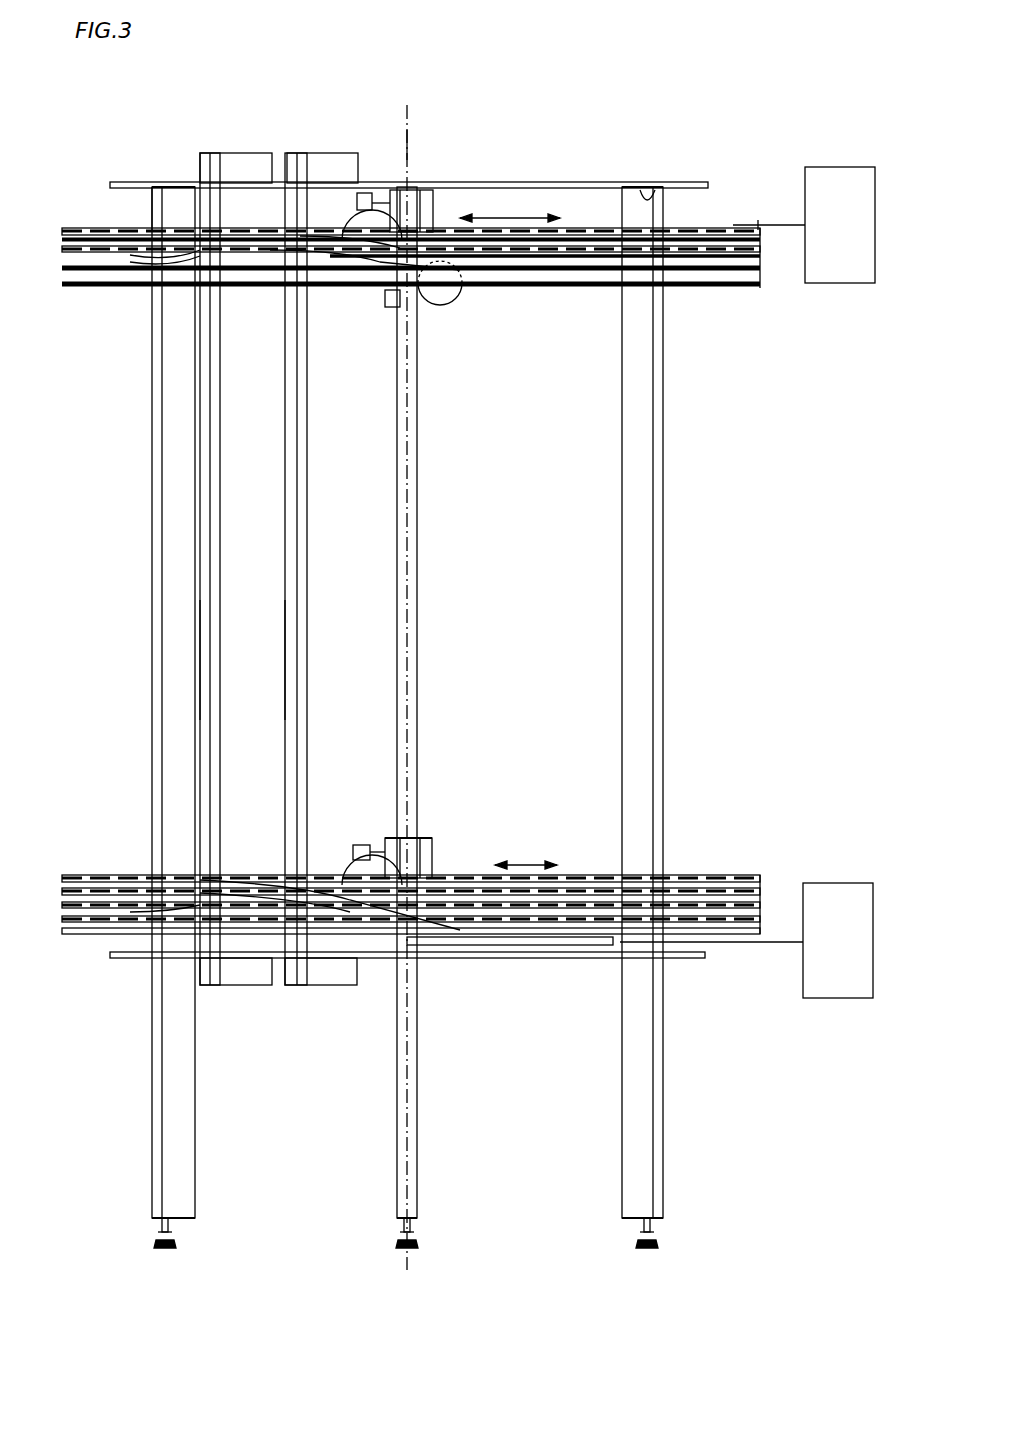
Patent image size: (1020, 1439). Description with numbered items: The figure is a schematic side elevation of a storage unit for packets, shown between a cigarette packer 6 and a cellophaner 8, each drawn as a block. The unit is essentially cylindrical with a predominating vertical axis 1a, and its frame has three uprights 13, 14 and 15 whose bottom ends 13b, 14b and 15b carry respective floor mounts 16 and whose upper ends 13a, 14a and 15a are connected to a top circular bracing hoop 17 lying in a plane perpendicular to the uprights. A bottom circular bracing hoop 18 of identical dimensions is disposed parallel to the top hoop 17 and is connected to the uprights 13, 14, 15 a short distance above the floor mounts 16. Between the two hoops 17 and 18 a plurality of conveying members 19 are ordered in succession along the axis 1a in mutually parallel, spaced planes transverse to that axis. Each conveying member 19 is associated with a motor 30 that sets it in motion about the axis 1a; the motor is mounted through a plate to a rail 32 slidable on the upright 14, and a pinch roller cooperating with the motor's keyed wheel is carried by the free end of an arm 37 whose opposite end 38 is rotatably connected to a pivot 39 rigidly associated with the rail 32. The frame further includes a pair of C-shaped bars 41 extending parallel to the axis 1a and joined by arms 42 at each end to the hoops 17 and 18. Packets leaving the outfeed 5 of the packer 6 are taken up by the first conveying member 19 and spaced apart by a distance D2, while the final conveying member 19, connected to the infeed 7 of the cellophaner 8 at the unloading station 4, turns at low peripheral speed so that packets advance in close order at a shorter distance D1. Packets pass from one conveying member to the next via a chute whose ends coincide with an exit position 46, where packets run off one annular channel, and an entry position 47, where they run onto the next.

The vertical axis 1a is at (405, 142).
The unloading station 4 is at (433, 962).
The outfeed 5 is at (735, 224).
The cigarette packer 6 is at (804, 225).
The infeed 7 is at (600, 960).
The cellophaner 8 is at (746, 940).
The upright 13 is at (152, 1146).
The upper end of first column 13a is at (165, 189).
The lower end of first column 13b is at (157, 1222).
The upright 14 is at (397, 1143).
The upper end of second column 14a is at (440, 192).
The lower end of second column 14b is at (402, 1222).
The upright 15 is at (622, 1142).
The upper end of third column 15a is at (665, 196).
The lower end of third column 15b is at (645, 1222).
The floor mounts 16 is at (178, 1243).
The top circular bracing hoop 17 is at (611, 182).
The bottom circular bracing hoop 18 is at (690, 960).
The conveying members 19 is at (762, 290).
The motor 30 is at (458, 305).
The rail 32 is at (432, 302).
The arm 37 is at (350, 858).
The opposite end 38 is at (356, 845).
The pivot 39 is at (388, 840).
The C-shaped bars 41 is at (293, 658).
The arms 42 is at (305, 160).
The exit position 46 is at (128, 258).
The entry position 47 is at (478, 300).
The distance D1 is at (560, 862).
The distance D2 is at (515, 216).